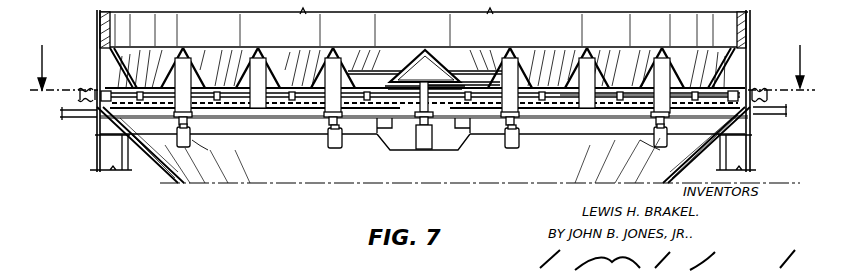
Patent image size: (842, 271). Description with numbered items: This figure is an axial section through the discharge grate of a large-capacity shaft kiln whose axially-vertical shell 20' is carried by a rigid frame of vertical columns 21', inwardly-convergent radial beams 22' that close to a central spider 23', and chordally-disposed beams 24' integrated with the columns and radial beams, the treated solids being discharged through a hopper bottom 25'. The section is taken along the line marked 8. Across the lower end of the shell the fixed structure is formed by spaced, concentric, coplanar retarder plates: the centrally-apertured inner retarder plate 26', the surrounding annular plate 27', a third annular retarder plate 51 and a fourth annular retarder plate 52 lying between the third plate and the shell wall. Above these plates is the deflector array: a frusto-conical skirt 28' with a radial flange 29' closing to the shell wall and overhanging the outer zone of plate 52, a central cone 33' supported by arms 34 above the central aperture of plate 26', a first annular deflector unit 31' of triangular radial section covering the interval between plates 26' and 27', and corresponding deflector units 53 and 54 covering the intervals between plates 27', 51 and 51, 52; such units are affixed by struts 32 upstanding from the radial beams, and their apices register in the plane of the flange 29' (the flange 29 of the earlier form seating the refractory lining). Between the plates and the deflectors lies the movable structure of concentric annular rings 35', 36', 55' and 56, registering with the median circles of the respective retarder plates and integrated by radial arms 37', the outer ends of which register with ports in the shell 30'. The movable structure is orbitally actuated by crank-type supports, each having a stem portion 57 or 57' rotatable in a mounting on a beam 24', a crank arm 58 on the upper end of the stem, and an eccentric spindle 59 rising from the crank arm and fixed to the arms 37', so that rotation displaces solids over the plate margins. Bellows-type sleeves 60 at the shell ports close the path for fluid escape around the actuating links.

The section line 8- 8 is at (422, 67).
The shell 20' is at (763, 90).
The vertical columns 21' is at (427, 153).
The radial beams 22' is at (425, 115).
The central spider 23' is at (429, 148).
The chordally-disposed beams 24' is at (422, 144).
The hopper bottom 25' is at (448, 158).
The retarder plate 26' is at (434, 122).
The annular plate 27' is at (595, 117).
The frusto-conical skirt 28' is at (143, 69).
The radial flange 29' is at (133, 59).
The annular flange 29 is at (712, 58).
The shell 30' is at (88, 86).
The first annular deflector unit 31' is at (425, 62).
The struts 32 is at (665, 52).
The central cone 33' is at (425, 57).
The arms 34 is at (452, 74).
The annular ring 35' is at (346, 115).
The annular ring 36' is at (255, 117).
The radial arms 37' is at (549, 68).
The third annular retarder plate 51 is at (616, 100).
The fourth annular retarder plate 52 is at (712, 106).
The annular deflector unit 53 is at (278, 64).
The annular deflector unit 54 is at (212, 70).
The annular ring 55' is at (425, 109).
The annular ring 56 is at (112, 100).
The stem portion 57 is at (209, 145).
The stem portion 57' is at (638, 142).
The crank arm 58 is at (668, 112).
The spindle 59 is at (622, 100).
The bellows-type sleeves 60 is at (770, 97).